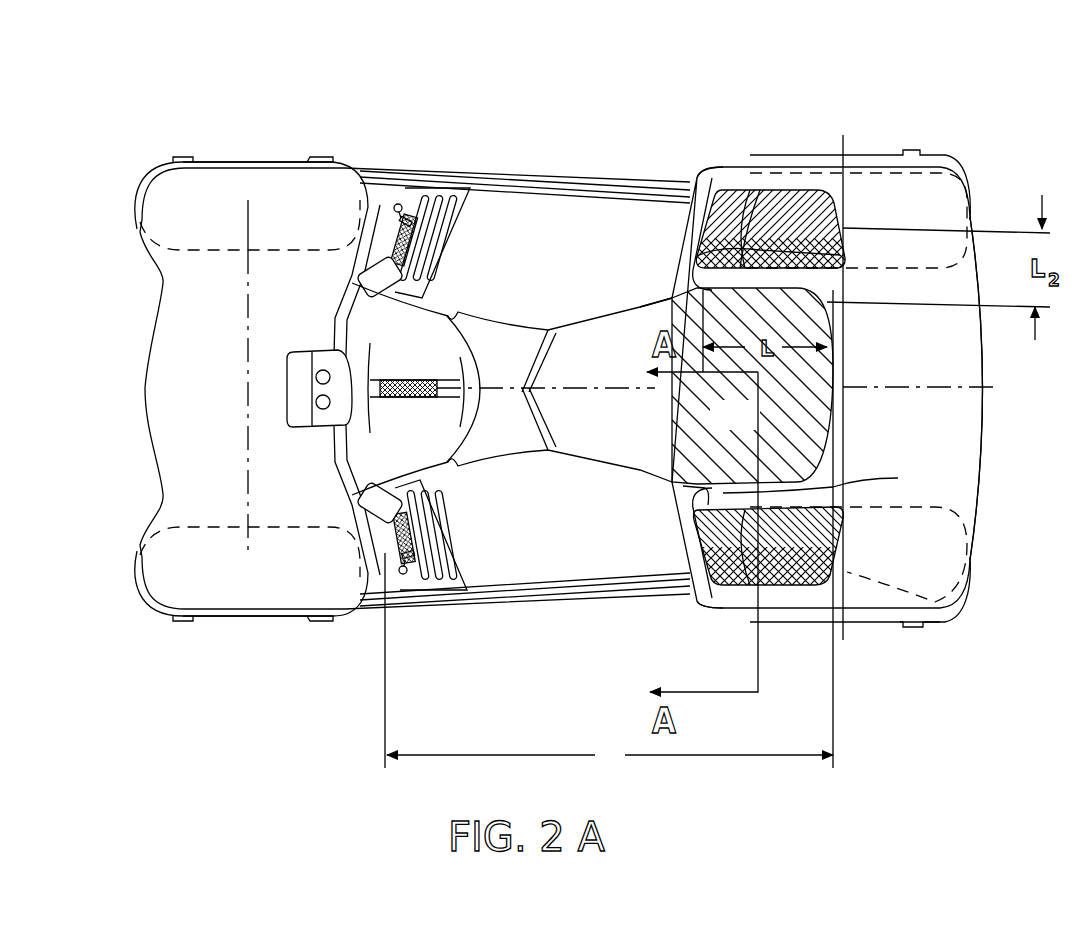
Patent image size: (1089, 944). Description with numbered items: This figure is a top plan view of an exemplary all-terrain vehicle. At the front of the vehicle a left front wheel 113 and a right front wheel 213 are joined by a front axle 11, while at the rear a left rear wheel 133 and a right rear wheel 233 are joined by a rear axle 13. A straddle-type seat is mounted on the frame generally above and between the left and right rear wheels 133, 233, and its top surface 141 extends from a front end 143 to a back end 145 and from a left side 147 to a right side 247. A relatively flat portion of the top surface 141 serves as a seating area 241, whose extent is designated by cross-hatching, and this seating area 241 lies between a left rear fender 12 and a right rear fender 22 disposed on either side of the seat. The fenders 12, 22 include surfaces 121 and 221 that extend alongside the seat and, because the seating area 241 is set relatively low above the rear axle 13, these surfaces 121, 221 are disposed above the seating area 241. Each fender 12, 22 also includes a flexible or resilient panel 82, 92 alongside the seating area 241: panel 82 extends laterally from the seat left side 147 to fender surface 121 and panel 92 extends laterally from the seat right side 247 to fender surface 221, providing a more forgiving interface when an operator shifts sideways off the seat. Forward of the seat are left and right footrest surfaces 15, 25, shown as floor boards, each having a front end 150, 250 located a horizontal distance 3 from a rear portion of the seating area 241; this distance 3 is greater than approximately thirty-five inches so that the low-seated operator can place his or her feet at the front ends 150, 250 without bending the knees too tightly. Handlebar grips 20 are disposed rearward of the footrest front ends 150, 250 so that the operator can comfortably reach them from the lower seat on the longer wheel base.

The horizontal distance 3 is at (609, 531).
The front axle 11 is at (248, 407).
The left rear fender 12 is at (718, 613).
The rear axle 13 is at (940, 600).
The left footrest surface 15 is at (467, 590).
The handlebar grips 20 is at (400, 258).
The right rear fender 22 is at (700, 165).
The right footrest surface 25 is at (483, 188).
The flexible panel 82 is at (806, 592).
The flexible panel 92 is at (748, 200).
The left front wheel 113 is at (228, 640).
The fender surface 121 is at (750, 592).
The left rear wheel 133 is at (907, 647).
The top surface 141 is at (648, 428).
The front end 143 is at (527, 347).
The back end 145 is at (843, 375).
The left side 147 is at (831, 481).
The front end 150 is at (400, 595).
The right front wheel 213 is at (225, 135).
The fender surface 221 is at (770, 230).
The right rear wheel 233 is at (828, 133).
The seating area 241 is at (752, 428).
The right side 247 is at (670, 294).
The front end 250 is at (398, 205).